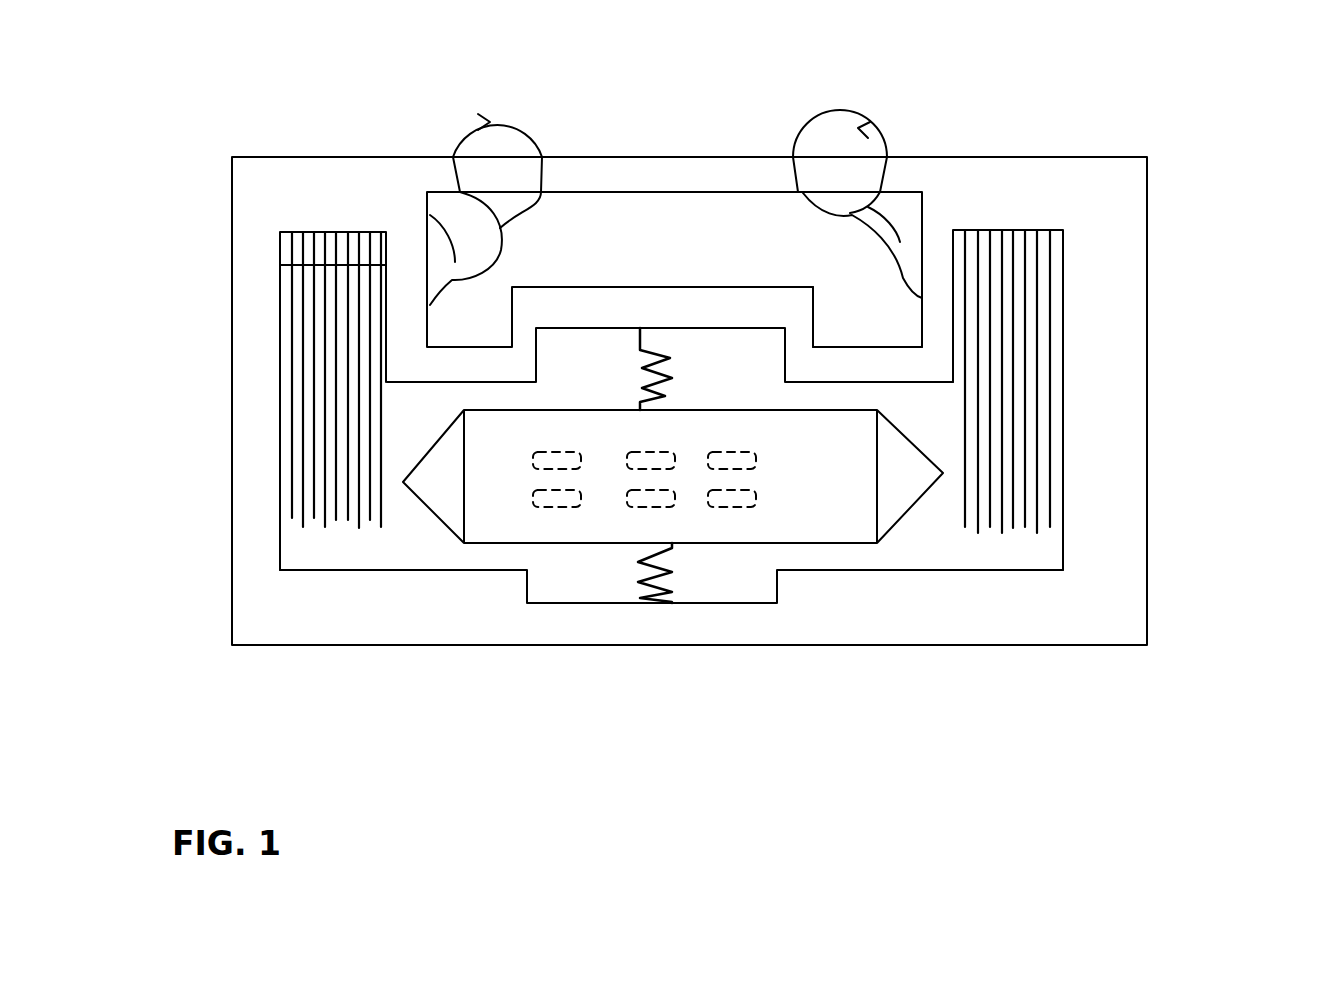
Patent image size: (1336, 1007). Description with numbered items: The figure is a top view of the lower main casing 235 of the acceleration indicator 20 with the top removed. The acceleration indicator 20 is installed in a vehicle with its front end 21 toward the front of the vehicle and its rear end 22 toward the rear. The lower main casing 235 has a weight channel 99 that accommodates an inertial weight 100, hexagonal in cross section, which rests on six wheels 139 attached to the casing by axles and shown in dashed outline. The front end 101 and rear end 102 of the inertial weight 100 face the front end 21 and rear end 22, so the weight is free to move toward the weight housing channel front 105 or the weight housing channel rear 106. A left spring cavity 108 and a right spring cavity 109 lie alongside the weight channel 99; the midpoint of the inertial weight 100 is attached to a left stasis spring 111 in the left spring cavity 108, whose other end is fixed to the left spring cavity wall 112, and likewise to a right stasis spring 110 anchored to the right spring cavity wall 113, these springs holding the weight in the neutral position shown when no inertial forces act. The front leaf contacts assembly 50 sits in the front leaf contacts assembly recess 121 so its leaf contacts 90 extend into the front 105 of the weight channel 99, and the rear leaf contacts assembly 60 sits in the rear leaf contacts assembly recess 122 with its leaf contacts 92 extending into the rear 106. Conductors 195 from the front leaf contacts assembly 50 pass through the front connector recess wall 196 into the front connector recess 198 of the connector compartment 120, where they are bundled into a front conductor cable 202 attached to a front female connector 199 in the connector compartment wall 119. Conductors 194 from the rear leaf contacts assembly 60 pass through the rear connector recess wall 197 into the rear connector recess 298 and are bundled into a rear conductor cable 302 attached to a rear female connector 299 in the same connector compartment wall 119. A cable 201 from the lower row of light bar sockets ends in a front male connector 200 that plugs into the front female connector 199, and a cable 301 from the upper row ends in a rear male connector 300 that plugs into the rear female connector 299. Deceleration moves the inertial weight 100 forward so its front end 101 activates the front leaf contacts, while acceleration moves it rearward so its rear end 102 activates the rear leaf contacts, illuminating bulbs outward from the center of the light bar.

The acceleration indicator 20 is at (232, 627).
The front end 21 is at (232, 458).
The rear end 22 is at (1147, 452).
The front leaf contacts assembly 50 is at (412, 288).
The rear leaf contacts assembly 60 is at (1017, 243).
The leaf contacts 90 is at (342, 493).
The leaf contacts 92 is at (1015, 498).
The weight channel 99 is at (398, 557).
The inertial weight 100 is at (503, 518).
The front end 101 is at (420, 500).
The rear end 102 is at (893, 527).
The weight housing channel front 105 is at (417, 427).
The weight housing channel rear 106 is at (923, 520).
The left spring cavity 108 is at (570, 587).
The right spring cavity 109 is at (582, 357).
The right stasis spring 110 is at (673, 360).
The left stasis spring 111 is at (648, 583).
The left spring cavity wall 112 is at (720, 603).
The right spring cavity wall 113 is at (752, 297).
The connector compartment wall 119 is at (660, 168).
The connector compartment 120 is at (778, 235).
The front leaf contacts assembly recess 121 is at (367, 248).
The rear leaf contacts assembly recess 122 is at (1007, 275).
The wheels 139 is at (750, 503).
The conductors 194 is at (913, 248).
The conductors 195 is at (433, 258).
The front connector recess wall 196 is at (385, 272).
The rear connector recess wall 197 is at (940, 263).
The front connector recess 198 is at (453, 327).
The front female connector 199 is at (560, 195).
The front male connector 200 is at (513, 148).
The cable 201 is at (488, 124).
The front conductor cable 202 is at (480, 256).
The lower main casing 235 is at (258, 355).
The rear connector recess 298 is at (897, 307).
The rear female connector 299 is at (835, 128).
The rear male connector 300 is at (828, 145).
The cable 301 is at (860, 133).
The rear conductor cable 302 is at (893, 242).